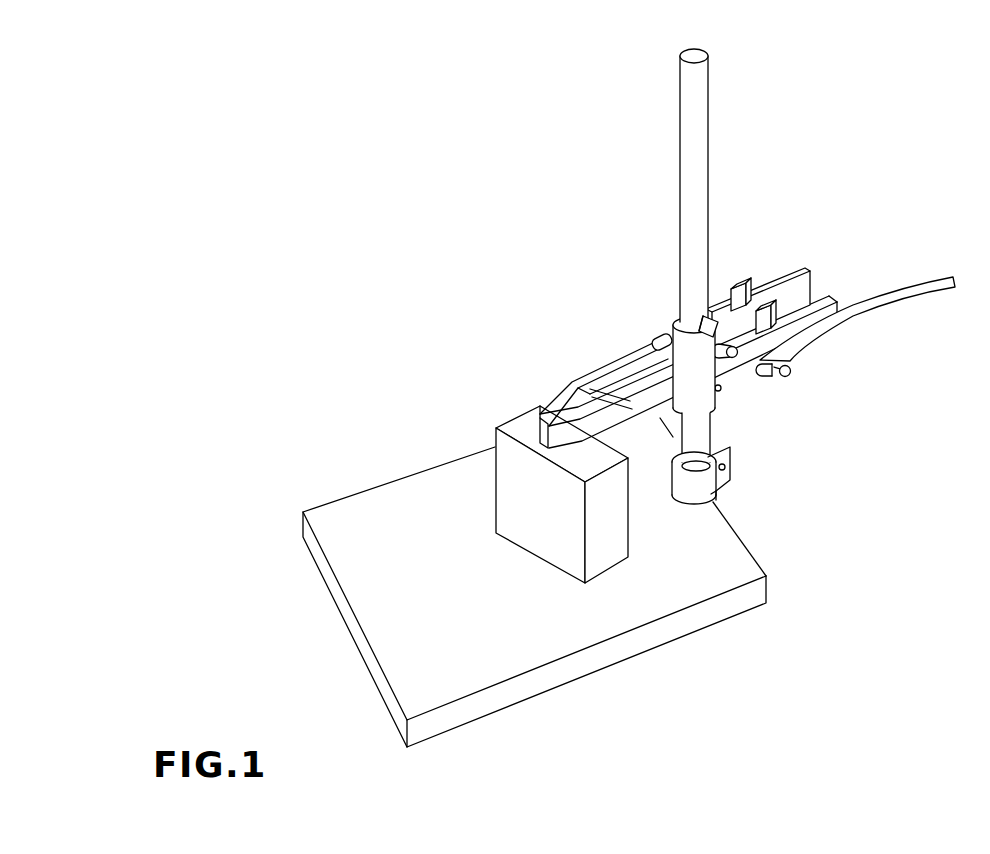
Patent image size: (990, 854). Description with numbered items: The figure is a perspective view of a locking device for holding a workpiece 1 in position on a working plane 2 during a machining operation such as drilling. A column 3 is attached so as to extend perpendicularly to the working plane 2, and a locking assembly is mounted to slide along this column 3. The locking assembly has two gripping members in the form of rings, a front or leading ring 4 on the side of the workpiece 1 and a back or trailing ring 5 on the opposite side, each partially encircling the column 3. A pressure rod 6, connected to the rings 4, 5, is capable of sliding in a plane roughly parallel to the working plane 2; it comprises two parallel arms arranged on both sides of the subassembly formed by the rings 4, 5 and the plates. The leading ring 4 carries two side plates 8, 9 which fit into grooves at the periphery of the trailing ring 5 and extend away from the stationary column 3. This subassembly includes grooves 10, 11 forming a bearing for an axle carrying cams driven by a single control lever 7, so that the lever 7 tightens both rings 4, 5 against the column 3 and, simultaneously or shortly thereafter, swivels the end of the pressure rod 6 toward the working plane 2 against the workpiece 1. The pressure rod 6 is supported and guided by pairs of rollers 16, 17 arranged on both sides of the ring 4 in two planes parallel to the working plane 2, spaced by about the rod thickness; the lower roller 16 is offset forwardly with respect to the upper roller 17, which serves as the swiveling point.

The workpiece 1 is at (513, 417).
The working plane 2 is at (418, 485).
The column 3 is at (710, 173).
The front or leading ring 4 is at (673, 320).
The back or trailing ring 5 is at (712, 318).
The pressure rod 6 is at (583, 376).
The control lever 7 is at (912, 283).
The side plate 8 is at (743, 386).
The side plate 9 is at (727, 290).
The groove 10 is at (810, 296).
The groove 11 is at (757, 288).
The lower roller 16 is at (722, 397).
The upper roller 17 is at (737, 349).